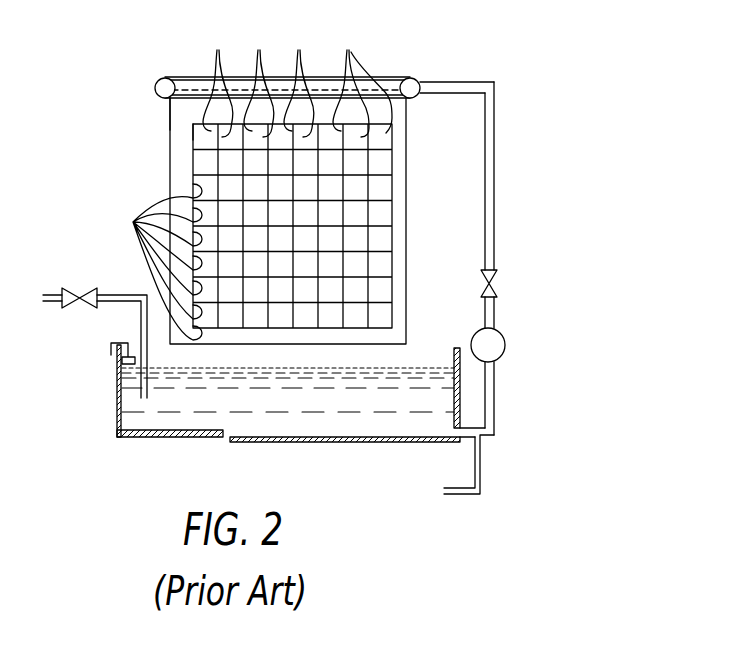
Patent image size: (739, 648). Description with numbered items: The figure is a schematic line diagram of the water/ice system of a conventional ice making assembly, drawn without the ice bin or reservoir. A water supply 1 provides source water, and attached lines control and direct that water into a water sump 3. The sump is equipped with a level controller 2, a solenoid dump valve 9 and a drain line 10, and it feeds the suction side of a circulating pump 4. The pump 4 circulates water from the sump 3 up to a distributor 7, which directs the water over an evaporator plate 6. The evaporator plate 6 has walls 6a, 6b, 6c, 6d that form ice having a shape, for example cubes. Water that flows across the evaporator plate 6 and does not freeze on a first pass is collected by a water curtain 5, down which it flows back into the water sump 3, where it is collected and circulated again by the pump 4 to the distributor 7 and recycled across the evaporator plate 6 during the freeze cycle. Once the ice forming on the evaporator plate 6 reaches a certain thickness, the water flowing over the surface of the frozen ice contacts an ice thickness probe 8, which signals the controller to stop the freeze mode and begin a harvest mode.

The water supply 1 is at (86, 342).
The level controller 2 is at (118, 345).
The water sump 3 is at (117, 430).
The circulating pump 4 is at (506, 343).
The water curtain 5 is at (406, 248).
The evaporator plate 6 is at (392, 183).
The wall 6a is at (170, 103).
The wall 6b is at (297, 80).
The wall 6c is at (425, 139).
The wall 6d is at (200, 136).
The distributor 7 is at (414, 79).
The ice thickness probe 8 is at (457, 87).
The solenoid dump valve 9 is at (497, 277).
The drain line 10 is at (481, 468).